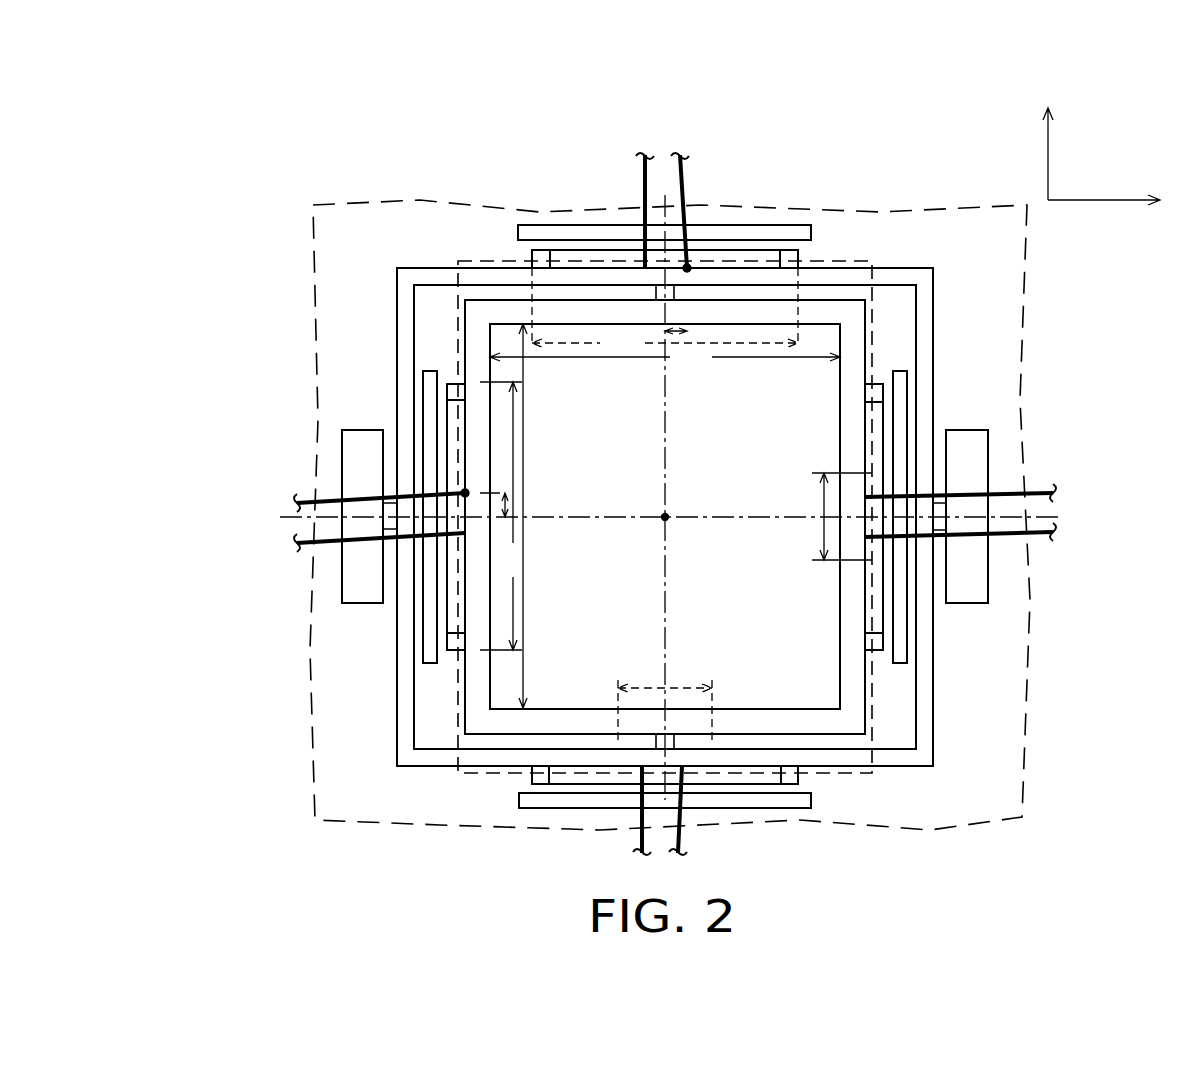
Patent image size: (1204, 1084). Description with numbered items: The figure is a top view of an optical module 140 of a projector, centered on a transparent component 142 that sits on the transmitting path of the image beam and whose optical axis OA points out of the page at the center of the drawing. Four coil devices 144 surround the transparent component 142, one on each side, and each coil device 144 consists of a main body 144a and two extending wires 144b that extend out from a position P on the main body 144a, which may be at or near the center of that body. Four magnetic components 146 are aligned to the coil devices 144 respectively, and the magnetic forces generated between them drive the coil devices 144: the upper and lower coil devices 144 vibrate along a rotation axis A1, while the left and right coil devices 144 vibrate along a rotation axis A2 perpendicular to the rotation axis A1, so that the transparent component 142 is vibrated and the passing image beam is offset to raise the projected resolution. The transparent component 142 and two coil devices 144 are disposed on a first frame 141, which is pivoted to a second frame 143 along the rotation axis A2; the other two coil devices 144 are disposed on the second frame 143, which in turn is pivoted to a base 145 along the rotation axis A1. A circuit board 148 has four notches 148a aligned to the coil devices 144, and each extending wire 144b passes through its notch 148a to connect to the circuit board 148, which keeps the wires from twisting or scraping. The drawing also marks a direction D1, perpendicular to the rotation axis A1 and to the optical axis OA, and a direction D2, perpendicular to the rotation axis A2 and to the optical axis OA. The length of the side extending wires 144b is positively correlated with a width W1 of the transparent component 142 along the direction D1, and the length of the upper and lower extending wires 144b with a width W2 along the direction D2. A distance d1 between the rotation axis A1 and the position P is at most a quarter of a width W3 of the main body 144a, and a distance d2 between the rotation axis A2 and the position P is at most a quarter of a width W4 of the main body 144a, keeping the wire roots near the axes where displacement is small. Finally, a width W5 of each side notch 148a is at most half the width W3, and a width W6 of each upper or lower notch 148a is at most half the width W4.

The optical module 140 is at (1145, 882).
The first frame 141 is at (853, 705).
The transparent component 142 is at (822, 692).
The second frame 143 is at (907, 758).
The coil device 144 is at (783, 108).
The main body 144a is at (756, 257).
The extending wire 144b is at (688, 160).
The base 145 is at (977, 467).
The magnetic component 146 is at (798, 233).
The circuit board 148 is at (1027, 730).
The notch 148a is at (632, 257).
The position P is at (690, 270).
The optical axis OA is at (666, 516).
The rotation axis A1 is at (287, 517).
The rotation axis A2 is at (663, 638).
The distance d1 is at (503, 505).
The distance d2 is at (673, 330).
The width W1 is at (538, 516).
The width W2 is at (665, 360).
The width W3 is at (501, 516).
The width W4 is at (665, 312).
The width W5 is at (826, 516).
The width W6 is at (665, 697).
The direction D1 is at (1048, 139).
The direction D2 is at (1119, 201).